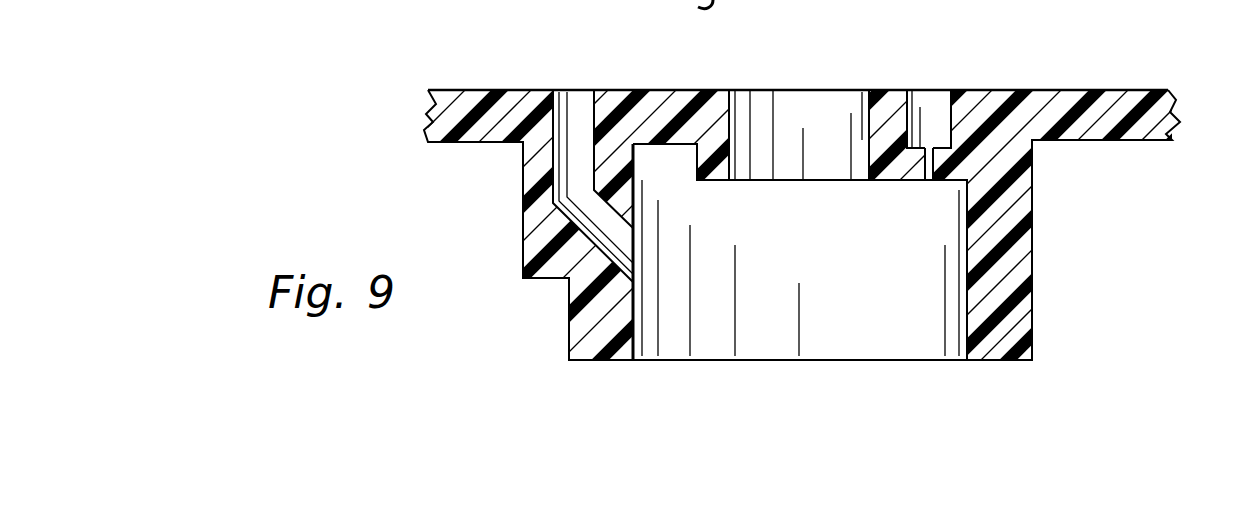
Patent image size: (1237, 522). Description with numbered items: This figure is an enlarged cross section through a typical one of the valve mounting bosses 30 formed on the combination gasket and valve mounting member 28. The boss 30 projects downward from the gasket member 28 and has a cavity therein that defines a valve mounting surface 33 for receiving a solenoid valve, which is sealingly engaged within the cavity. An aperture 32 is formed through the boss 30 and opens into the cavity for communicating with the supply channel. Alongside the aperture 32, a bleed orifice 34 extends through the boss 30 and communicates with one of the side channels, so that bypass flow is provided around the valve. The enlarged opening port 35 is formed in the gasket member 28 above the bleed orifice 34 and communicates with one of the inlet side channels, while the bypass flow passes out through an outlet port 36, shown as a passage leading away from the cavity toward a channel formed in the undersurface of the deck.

The combination gasket and valve mounting member 28 is at (1084, 80).
The valve mounting boss 30 is at (1032, 286).
The aperture 32 is at (868, 127).
The valve mounting surface 33 is at (633, 306).
The bleed orifice 34 is at (927, 181).
The enlarged opening port 35 is at (950, 112).
The outlet port 36 is at (593, 118).